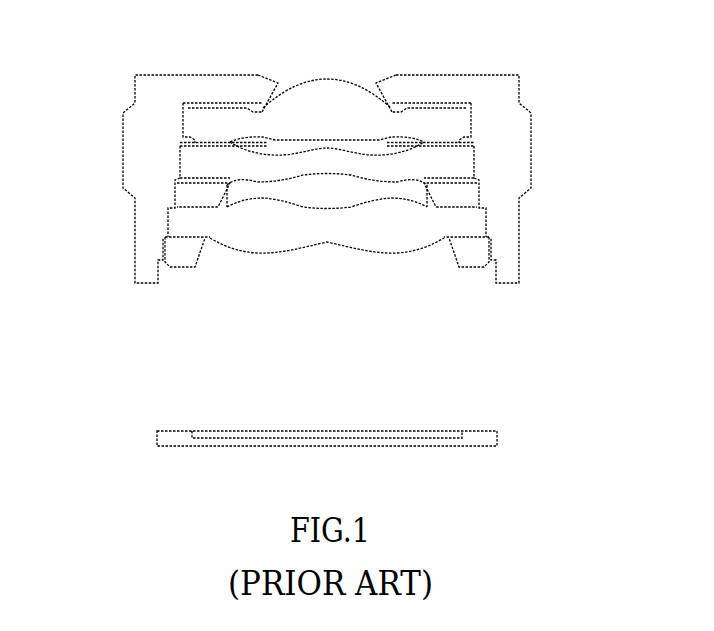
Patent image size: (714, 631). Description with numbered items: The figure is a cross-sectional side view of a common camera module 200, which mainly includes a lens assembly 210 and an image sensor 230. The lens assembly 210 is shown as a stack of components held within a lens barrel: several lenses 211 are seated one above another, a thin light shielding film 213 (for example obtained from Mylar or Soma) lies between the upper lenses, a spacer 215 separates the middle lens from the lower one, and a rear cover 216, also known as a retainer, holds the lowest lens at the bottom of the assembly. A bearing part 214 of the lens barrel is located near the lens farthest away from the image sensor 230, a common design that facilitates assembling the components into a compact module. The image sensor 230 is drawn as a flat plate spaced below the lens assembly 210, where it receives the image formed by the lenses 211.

The camera module 200 is at (85, 70).
The lens assembly 210 is at (115, 280).
The lens 211 is at (198, 228).
The light shielding film 213 is at (475, 147).
The bearing part 214 is at (472, 92).
The spacer 215 is at (475, 195).
The rear cover 216 is at (473, 252).
The image sensor 230 is at (463, 439).